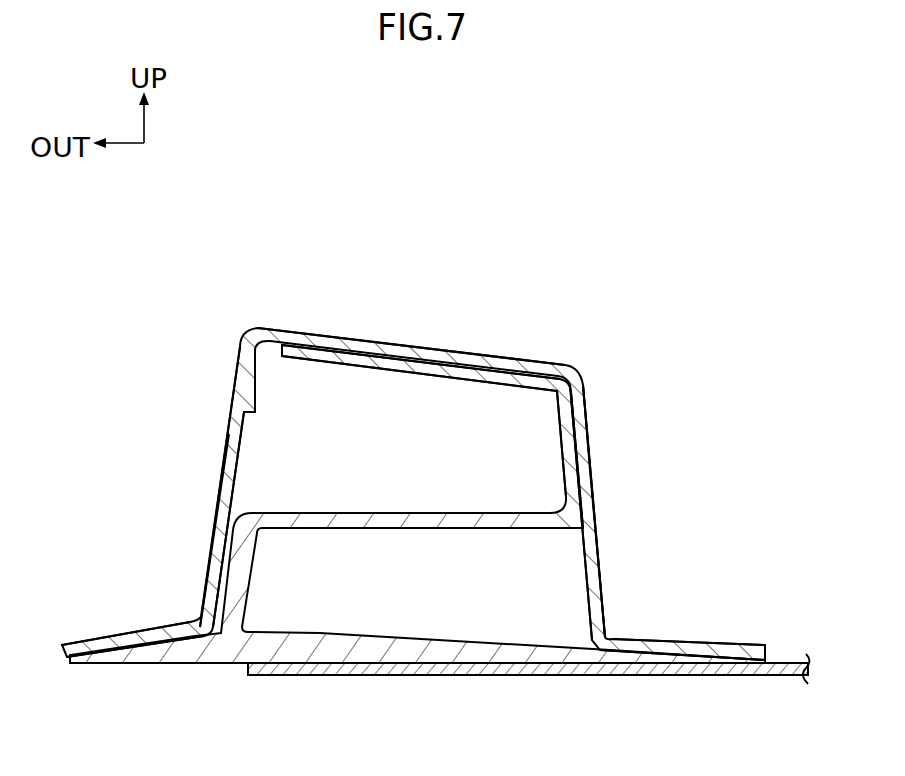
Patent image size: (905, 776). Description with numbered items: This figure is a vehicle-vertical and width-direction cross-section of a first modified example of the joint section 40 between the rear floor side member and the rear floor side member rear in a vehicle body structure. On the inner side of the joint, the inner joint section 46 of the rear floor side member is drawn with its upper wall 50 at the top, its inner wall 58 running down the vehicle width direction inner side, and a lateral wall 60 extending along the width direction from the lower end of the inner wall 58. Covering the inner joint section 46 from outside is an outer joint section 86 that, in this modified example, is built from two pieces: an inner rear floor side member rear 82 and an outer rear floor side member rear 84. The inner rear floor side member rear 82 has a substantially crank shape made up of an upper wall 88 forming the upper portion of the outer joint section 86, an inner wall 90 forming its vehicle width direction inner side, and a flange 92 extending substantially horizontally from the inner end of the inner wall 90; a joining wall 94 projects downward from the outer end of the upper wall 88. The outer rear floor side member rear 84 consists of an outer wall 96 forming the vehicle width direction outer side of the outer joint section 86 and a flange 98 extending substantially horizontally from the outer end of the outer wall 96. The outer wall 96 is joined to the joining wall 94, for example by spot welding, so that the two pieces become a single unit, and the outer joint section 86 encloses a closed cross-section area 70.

The joint section 40 is at (587, 302).
The inner joint section 46 is at (446, 353).
The upper wall 50 is at (402, 360).
The inner wall 58 is at (578, 458).
The lateral wall 60 is at (428, 528).
The closed cross-section area 70 is at (421, 463).
The inner rear floor side member rear 82 is at (585, 436).
The outer rear floor side member rear 84 is at (229, 434).
The outer joint section 86 is at (595, 402).
The upper wall 88 is at (351, 343).
The inner wall 90 is at (597, 545).
The flange 92 is at (673, 641).
The joining wall 94 is at (241, 365).
The outer wall 96 is at (220, 484).
The flange 98 is at (136, 637).